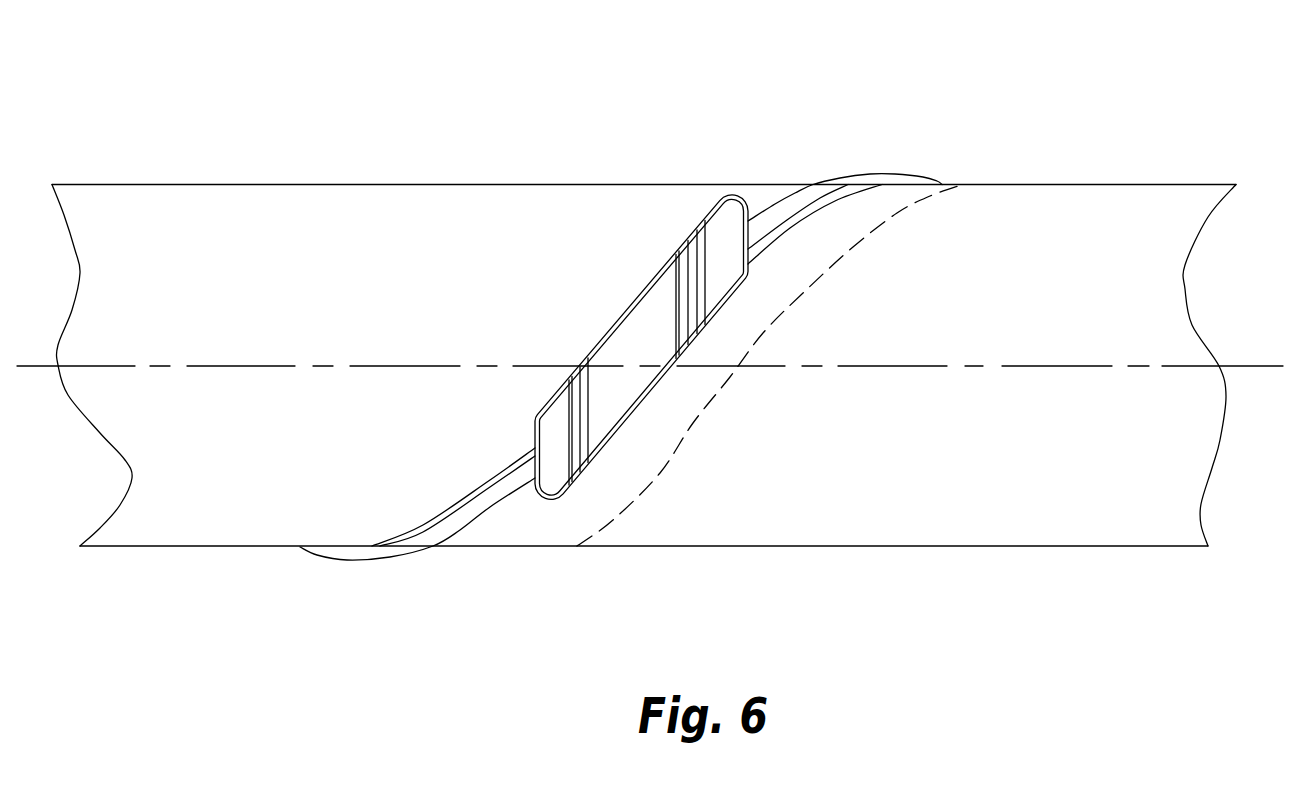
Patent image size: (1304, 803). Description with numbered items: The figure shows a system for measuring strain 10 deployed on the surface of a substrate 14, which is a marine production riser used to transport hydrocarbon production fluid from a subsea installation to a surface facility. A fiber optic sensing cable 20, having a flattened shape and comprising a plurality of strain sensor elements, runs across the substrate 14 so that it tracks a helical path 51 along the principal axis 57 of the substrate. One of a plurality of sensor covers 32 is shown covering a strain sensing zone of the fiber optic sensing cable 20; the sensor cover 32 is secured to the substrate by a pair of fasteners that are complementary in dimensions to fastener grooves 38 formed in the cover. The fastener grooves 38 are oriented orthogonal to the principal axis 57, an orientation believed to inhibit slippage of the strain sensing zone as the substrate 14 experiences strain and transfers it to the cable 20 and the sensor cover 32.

The system for measuring strain 10 is at (354, 129).
The substrate 14 is at (1090, 184).
The fiber optic sensing cable 20 is at (838, 178).
The sensor cover 32 is at (728, 212).
The fastener grooves 38 is at (685, 262).
The helical path 51 is at (660, 473).
The principal axis 57 is at (1260, 366).